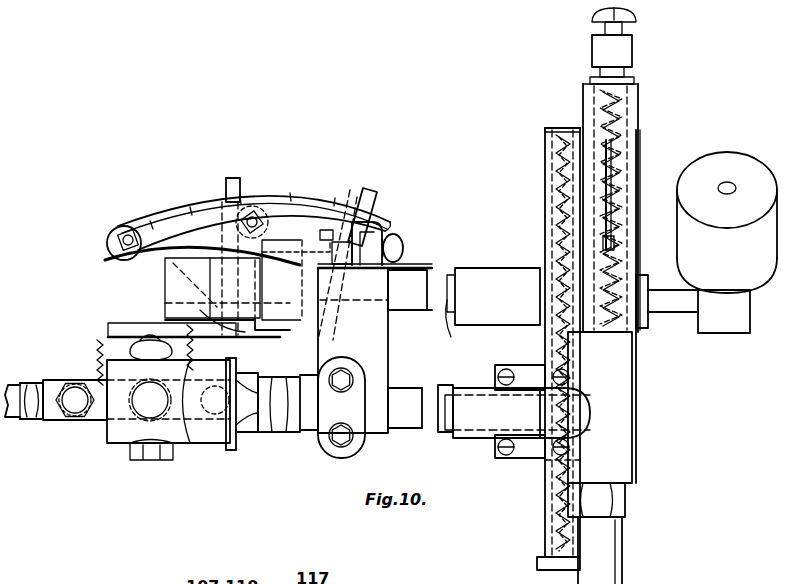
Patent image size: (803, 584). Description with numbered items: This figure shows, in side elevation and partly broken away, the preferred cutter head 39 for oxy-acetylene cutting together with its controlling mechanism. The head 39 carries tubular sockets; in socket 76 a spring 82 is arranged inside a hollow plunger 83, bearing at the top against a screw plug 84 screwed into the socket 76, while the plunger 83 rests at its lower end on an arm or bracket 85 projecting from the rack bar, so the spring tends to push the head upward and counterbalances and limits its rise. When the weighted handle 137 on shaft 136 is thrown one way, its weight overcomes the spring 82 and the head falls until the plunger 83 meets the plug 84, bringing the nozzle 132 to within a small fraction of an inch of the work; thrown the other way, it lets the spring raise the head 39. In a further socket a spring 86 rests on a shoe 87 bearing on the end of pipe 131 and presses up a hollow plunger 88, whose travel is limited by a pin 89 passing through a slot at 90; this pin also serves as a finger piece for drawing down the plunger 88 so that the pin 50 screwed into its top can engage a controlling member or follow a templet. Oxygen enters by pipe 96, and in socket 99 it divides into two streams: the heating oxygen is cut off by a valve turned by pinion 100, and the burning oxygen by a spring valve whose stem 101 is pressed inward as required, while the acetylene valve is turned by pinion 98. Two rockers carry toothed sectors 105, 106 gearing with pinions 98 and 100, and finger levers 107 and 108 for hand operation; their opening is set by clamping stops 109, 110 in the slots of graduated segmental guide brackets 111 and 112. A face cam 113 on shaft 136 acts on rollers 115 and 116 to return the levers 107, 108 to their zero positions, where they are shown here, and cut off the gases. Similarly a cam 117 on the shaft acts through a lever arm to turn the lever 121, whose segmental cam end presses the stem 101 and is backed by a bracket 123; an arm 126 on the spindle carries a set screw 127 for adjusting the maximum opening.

The cutter head 39 is at (618, 437).
The pin 50 is at (602, 25).
The tubular socket 76 is at (545, 242).
The spring 82 is at (548, 190).
The hollow plunger 83 is at (545, 498).
The screw plug 84 is at (565, 127).
The arm or bracket 85 is at (545, 562).
The spring 86 is at (626, 208).
The shoe 87 is at (600, 410).
The hollow plunger 88 is at (634, 80).
The pin 89 is at (612, 244).
The slot 90 is at (612, 160).
The pipe 96 is at (15, 393).
The pinion 98 is at (64, 412).
The socket 99 is at (213, 437).
The pinion 100 is at (128, 440).
The valve stem 101 is at (130, 342).
The toothed sector 105 is at (108, 382).
The toothed sector 106 is at (190, 352).
The finger lever 107 is at (231, 180).
The finger lever 108 is at (372, 192).
The clamping stop 109 is at (124, 227).
The clamping stop 110 is at (255, 206).
The graduated segmental guide bracket 111 is at (165, 210).
The graduated segmental guide bracket 112 is at (320, 198).
The face cam 113 is at (267, 282).
The roller 115 is at (205, 318).
The roller 116 is at (333, 342).
The cam 117 is at (276, 240).
The lever 121 is at (293, 368).
The bracket 123 is at (143, 318).
The arm 126 is at (375, 228).
The set screw 127 is at (403, 249).
The pipe 131 is at (410, 410).
The nozzle 132 is at (601, 558).
The shaft 136 is at (417, 300).
The weighted handle 137 is at (727, 222).